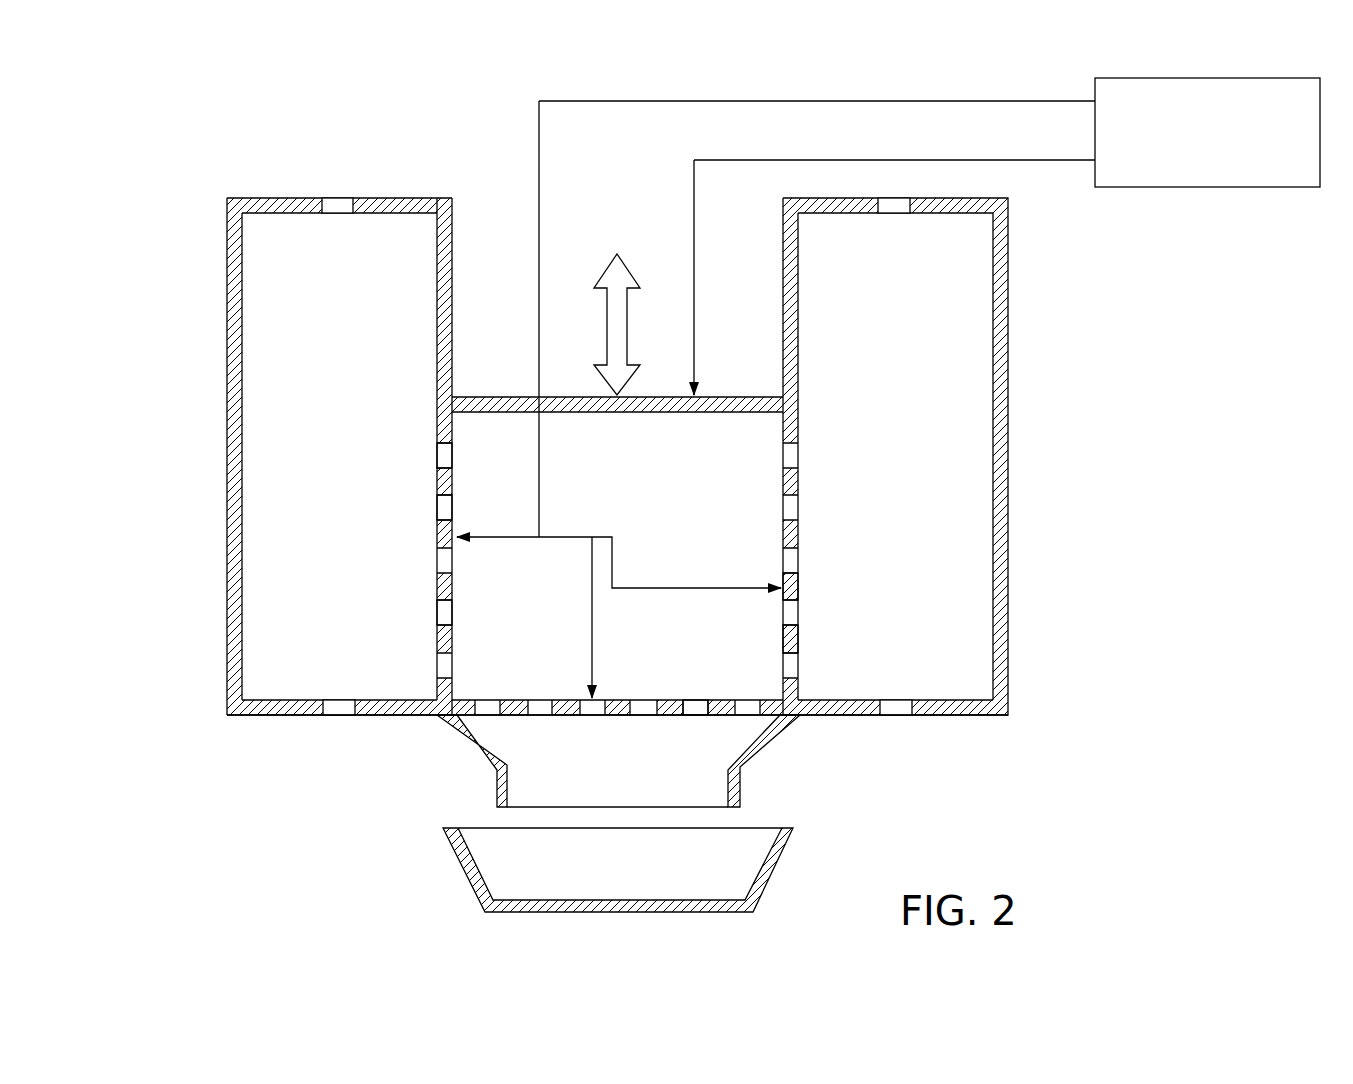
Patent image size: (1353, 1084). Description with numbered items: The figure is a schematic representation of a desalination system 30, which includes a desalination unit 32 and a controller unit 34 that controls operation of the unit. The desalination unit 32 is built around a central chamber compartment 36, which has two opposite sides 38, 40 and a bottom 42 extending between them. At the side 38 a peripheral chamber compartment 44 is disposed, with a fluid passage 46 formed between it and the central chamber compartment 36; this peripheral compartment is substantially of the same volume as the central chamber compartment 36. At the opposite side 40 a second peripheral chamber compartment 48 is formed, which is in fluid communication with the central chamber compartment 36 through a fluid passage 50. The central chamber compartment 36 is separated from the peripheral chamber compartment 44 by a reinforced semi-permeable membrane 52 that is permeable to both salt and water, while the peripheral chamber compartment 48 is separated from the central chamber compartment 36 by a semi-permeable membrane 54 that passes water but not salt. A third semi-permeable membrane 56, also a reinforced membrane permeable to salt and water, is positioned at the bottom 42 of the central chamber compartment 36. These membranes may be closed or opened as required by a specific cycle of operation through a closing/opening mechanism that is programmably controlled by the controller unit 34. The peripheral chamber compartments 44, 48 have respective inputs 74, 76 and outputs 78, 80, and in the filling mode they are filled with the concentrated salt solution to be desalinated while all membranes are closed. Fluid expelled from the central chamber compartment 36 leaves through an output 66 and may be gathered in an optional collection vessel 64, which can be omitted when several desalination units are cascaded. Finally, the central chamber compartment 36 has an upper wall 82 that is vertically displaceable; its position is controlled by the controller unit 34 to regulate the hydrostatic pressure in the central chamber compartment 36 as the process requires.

The desalination system 30 is at (201, 199).
The desalination unit 32 is at (199, 694).
The controller unit 34 is at (1205, 187).
The central chamber compartment 36 is at (732, 518).
The side 38 is at (447, 483).
The opposite side 40 is at (782, 480).
The bottom 42 is at (625, 715).
The peripheral chamber compartment 44 is at (262, 322).
The fluid passage 46 is at (426, 613).
The peripheral chamber compartment 48 is at (975, 318).
The fluid passage 50 is at (802, 640).
The reinforced semi-permeable membrane 52 is at (434, 455).
The semi-permeable membrane 54 is at (799, 587).
The third semi-permeable membrane 56 is at (681, 698).
The collection vessel 64 is at (772, 868).
The output 66 is at (548, 773).
The input 74 is at (334, 200).
The input 76 is at (893, 205).
The output 78 is at (338, 708).
The output 80 is at (897, 718).
The upper wall 82 is at (488, 395).